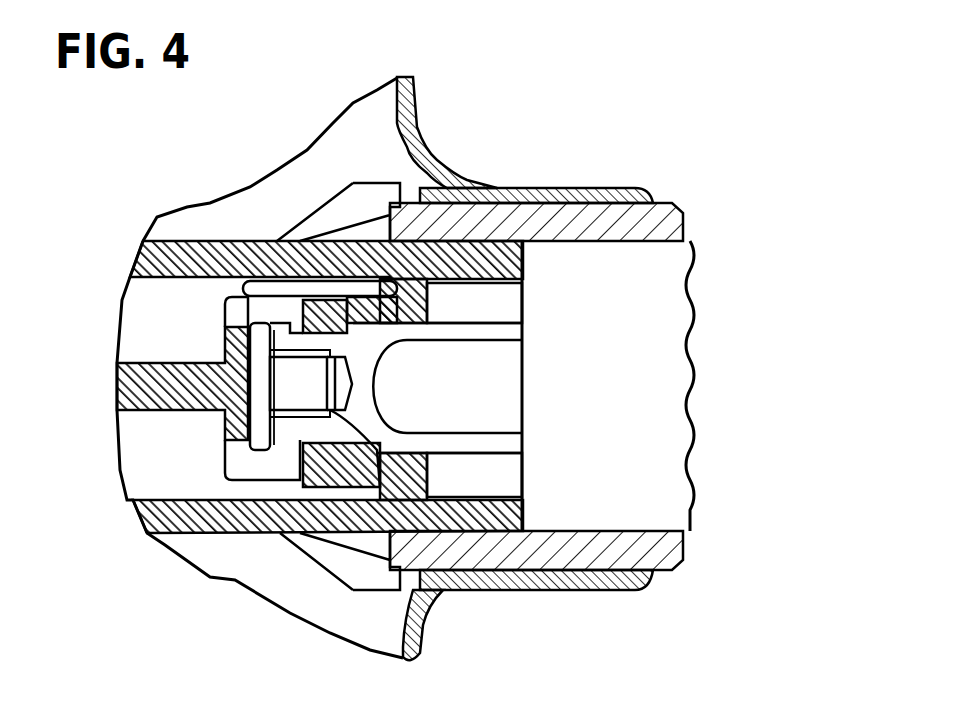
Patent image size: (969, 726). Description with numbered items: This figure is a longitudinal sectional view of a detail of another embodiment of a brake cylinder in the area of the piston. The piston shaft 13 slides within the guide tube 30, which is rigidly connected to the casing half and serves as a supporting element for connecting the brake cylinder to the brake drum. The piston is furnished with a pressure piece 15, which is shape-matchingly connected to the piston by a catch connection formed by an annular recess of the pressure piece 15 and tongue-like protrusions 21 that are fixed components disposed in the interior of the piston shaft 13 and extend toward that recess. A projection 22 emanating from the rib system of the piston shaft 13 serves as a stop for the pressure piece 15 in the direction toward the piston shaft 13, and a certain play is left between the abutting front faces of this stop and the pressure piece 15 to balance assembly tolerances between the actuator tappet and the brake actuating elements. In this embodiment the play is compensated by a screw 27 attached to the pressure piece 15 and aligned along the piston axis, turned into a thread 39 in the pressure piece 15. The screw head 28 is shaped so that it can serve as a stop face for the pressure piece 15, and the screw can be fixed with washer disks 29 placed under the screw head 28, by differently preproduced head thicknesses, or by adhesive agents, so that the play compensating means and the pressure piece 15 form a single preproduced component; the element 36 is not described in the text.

The piston shaft 13 is at (337, 255).
The pressure piece 15 is at (410, 330).
The protrusions 21 is at (335, 447).
The projection 22 is at (222, 397).
The screw 27 is at (302, 393).
The screw head 28 is at (253, 357).
The washer disks 29 is at (263, 333).
The guide tube 30 is at (565, 362).
The flange 36 is at (640, 222).
The thread 39 is at (407, 543).